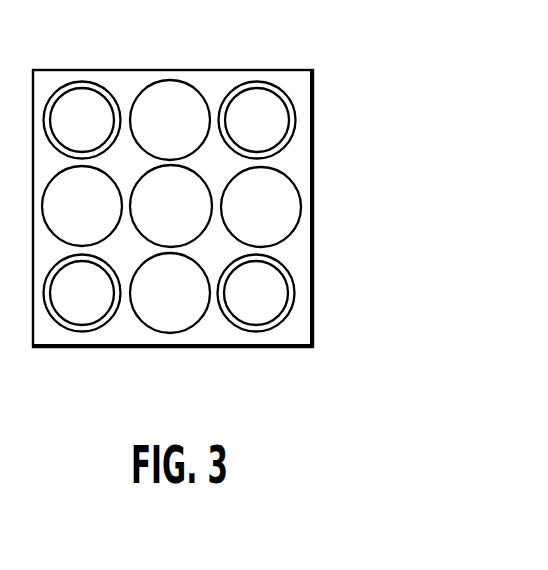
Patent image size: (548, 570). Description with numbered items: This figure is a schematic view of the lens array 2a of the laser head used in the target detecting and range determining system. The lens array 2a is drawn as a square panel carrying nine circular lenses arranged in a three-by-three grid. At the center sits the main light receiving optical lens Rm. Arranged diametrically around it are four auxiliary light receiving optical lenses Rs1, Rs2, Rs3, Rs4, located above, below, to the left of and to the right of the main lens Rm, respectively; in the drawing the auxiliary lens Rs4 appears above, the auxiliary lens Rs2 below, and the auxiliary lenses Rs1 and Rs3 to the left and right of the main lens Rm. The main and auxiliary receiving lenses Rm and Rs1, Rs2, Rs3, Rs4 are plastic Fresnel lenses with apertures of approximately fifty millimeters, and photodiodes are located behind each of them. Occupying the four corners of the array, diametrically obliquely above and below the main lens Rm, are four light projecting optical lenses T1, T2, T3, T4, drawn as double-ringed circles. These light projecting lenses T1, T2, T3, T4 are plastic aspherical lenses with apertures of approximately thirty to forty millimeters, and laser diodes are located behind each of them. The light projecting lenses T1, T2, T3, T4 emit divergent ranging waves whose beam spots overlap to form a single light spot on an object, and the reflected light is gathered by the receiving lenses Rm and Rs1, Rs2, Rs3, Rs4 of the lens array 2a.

The lens array 2a is at (321, 112).
The light projecting optical lens T1 is at (82, 120).
The light projecting optical lens T2 is at (82, 293).
The light projecting optical lens T3 is at (257, 120).
The light projecting optical lens T4 is at (256, 293).
The auxiliary light receiving optical lens Rs1 is at (82, 206).
The auxiliary light receiving optical lens Rs2 is at (170, 293).
The auxiliary light receiving optical lens Rs3 is at (261, 207).
The auxiliary light receiving optical lens Rs4 is at (170, 120).
The main light receiving optical lens Rm is at (171, 206).